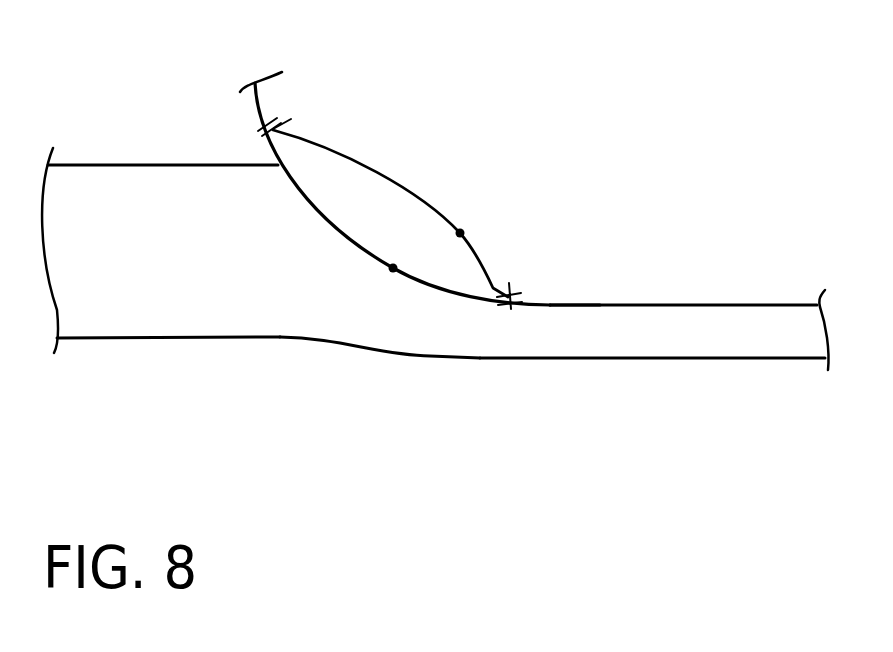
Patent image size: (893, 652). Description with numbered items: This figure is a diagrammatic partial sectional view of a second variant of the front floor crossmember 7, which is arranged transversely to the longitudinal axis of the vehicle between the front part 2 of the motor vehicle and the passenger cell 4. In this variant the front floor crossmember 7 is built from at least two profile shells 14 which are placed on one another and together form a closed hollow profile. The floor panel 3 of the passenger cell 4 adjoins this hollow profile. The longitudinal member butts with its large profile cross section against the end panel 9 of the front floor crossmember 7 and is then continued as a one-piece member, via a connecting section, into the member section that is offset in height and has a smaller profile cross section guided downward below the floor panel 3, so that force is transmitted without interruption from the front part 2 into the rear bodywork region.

The front part 2 is at (173, 105).
The floor panel 3 is at (568, 303).
The passenger cell 4 is at (695, 163).
The front floor crossmember 7 is at (412, 187).
The end panel 9 is at (338, 233).
The profile shells 14 is at (460, 233).